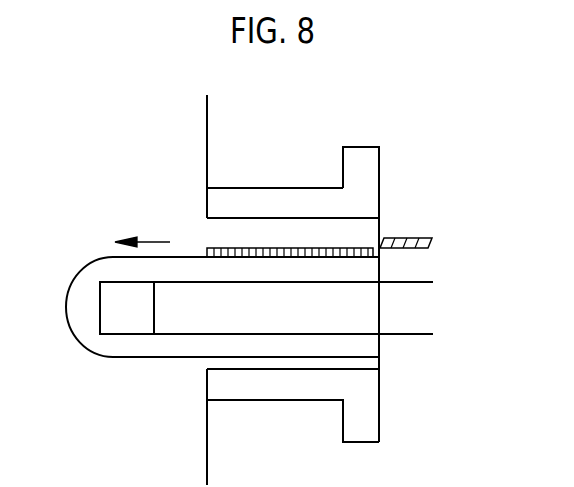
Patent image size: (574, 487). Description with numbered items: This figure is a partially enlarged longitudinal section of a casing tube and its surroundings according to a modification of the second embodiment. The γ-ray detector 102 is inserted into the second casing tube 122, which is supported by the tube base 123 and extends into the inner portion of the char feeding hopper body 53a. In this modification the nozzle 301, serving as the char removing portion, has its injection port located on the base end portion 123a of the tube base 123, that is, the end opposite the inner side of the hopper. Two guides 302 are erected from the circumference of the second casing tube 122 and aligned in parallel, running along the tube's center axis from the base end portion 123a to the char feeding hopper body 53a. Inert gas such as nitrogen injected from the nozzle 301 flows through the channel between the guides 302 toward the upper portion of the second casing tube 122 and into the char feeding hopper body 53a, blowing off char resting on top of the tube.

The char feeding hopper body 53a is at (206, 134).
The tube base 123 is at (283, 188).
The base end portion 123a is at (379, 169).
The guides 302 is at (232, 248).
The nozzle 301 is at (432, 245).
The γ-ray detector 102 is at (423, 308).
The second casing tube 122 is at (132, 357).